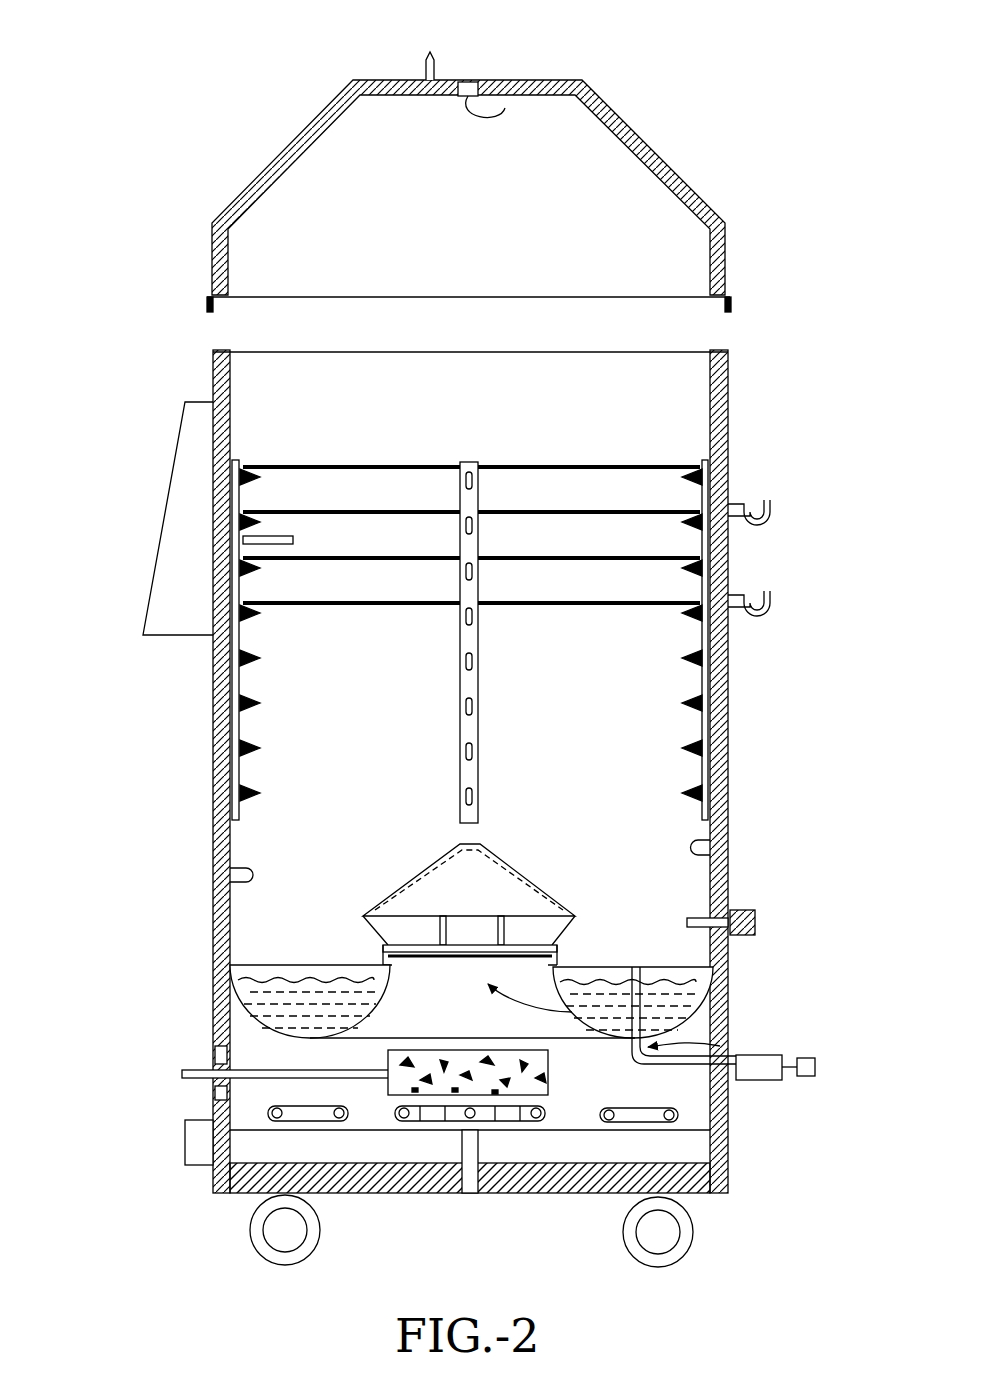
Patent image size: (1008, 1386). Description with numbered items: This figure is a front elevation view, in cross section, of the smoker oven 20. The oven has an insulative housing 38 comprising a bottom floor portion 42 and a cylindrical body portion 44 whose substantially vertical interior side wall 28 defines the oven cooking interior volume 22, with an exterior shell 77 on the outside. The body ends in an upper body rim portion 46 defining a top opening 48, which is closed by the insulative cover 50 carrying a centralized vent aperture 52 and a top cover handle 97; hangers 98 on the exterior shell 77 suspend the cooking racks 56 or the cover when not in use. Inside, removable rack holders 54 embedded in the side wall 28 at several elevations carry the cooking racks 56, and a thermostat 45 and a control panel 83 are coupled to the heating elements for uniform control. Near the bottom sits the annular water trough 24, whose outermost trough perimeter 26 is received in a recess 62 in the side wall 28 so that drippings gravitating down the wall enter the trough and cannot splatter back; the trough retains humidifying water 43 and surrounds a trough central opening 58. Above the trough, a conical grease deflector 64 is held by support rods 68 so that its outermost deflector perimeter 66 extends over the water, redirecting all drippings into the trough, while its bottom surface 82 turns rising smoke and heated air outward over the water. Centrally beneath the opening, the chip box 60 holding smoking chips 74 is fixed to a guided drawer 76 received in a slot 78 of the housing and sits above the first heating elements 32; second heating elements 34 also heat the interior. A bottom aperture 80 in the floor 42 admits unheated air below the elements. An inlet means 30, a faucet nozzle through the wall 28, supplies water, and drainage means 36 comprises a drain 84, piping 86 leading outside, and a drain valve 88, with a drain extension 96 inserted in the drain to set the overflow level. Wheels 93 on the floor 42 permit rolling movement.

The smoker oven 20 is at (114, 445).
The oven cooking interior volume 22 is at (394, 714).
The annular water trough 24 is at (232, 965).
The outermost trough perimeter 26 is at (716, 950).
The interior side wall 28 is at (240, 876).
The inlet means 30 is at (756, 920).
The first heating elements 32 is at (445, 1122).
The second heating elements 34 is at (305, 1122).
The drainage means 36 is at (728, 1017).
The insulative housing 38 is at (805, 585).
The bottom floor portion 42 is at (600, 1195).
The humidifying water 43 is at (598, 975).
The cylindrical body portion 44 is at (722, 755).
The thermostat 45 is at (258, 548).
The upper body rim portion 46 is at (432, 415).
The top opening 48 is at (228, 350).
The oven top or cover 50 is at (622, 115).
The aperture 52 is at (470, 100).
The removable rack holders 54 is at (240, 697).
The cooking racks 56 is at (700, 490).
The trough central opening 58 is at (690, 920).
The chip box 60 is at (388, 1088).
The recess 62 is at (262, 990).
The grease deflector 64 is at (395, 912).
The outermost deflector perimeter 66 is at (262, 968).
The support rods 68 is at (446, 940).
The smoking chips 74 is at (548, 1095).
The guided drawer 76 is at (208, 1052).
The exterior shell 77 is at (728, 650).
The slot 78 is at (205, 1088).
The bottom aperture 80 is at (470, 1195).
The deflector bottom surface 82 is at (405, 883).
The control panel 83 is at (160, 530).
The drain 84 is at (716, 990).
The piping 86 is at (715, 1108).
The drain valve 88 is at (782, 1060).
The wheels 93 is at (282, 1265).
The drain extension 96 is at (636, 975).
The top cover handle 97 is at (430, 54).
The hangers 98 is at (742, 600).